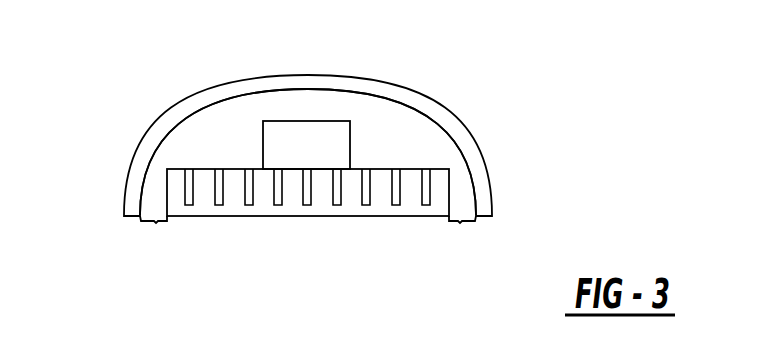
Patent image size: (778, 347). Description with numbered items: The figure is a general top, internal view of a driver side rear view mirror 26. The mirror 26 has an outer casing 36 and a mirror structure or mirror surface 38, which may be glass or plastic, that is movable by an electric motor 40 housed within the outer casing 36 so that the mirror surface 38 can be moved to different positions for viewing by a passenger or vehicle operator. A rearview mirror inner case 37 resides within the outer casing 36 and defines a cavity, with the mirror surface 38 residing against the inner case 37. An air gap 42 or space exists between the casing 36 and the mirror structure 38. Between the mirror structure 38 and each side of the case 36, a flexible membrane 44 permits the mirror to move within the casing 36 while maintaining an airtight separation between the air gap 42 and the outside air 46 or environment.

The mirror 26 is at (129, 88).
The outer casing 36 is at (467, 125).
The rearview mirror inner case 37 is at (408, 169).
The mirror structure 38 is at (337, 216).
The electric motor 40 is at (350, 137).
The air gap 42 is at (236, 146).
The flexible membrane 44 is at (157, 223).
The outside air 46 is at (285, 286).